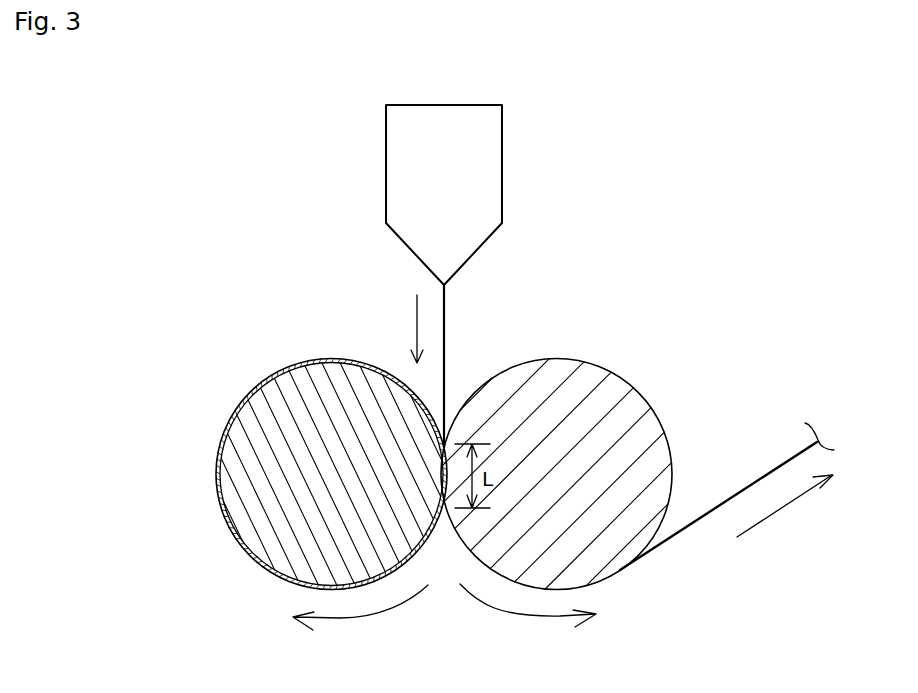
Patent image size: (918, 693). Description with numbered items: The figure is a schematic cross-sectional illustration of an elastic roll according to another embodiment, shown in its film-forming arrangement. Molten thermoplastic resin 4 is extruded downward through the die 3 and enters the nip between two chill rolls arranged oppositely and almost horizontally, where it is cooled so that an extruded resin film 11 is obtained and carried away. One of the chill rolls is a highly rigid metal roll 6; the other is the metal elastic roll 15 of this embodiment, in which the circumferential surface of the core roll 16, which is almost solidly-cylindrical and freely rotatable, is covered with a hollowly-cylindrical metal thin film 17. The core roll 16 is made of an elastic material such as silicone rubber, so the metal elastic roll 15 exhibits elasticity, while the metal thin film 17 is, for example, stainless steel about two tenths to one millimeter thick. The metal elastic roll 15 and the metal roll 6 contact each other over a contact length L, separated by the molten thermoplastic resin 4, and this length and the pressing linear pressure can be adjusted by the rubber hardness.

The die 3 is at (487, 161).
The molten thermoplastic resin 4 is at (445, 320).
The metal roll 6 is at (620, 433).
The extruded resin film 11 is at (713, 510).
The metal elastic roll 15 is at (263, 495).
The core roll 16 is at (262, 452).
The metal thin film 17 is at (217, 500).